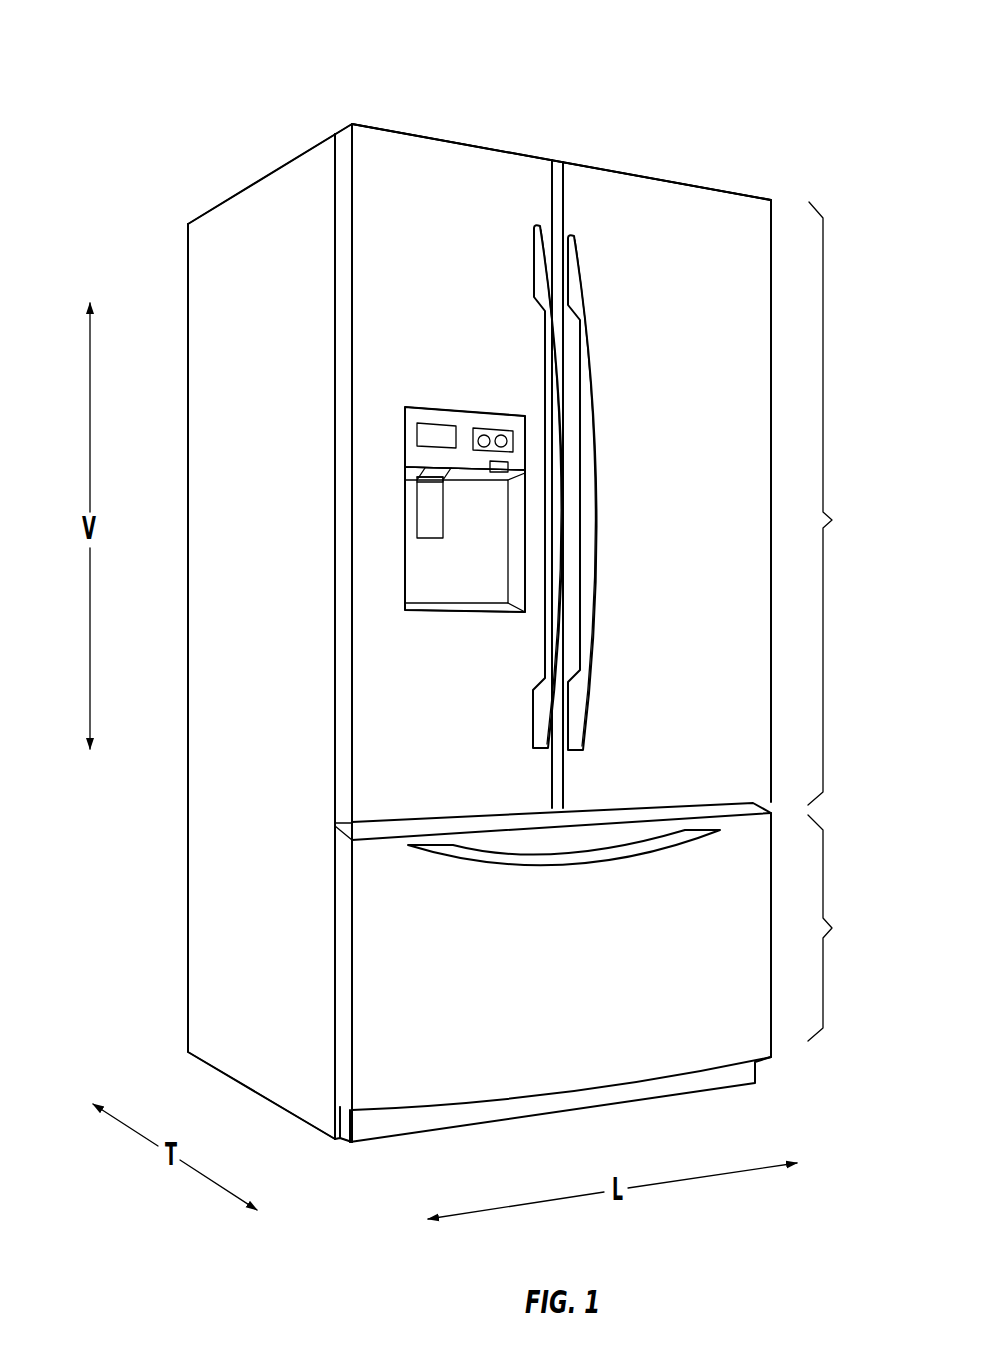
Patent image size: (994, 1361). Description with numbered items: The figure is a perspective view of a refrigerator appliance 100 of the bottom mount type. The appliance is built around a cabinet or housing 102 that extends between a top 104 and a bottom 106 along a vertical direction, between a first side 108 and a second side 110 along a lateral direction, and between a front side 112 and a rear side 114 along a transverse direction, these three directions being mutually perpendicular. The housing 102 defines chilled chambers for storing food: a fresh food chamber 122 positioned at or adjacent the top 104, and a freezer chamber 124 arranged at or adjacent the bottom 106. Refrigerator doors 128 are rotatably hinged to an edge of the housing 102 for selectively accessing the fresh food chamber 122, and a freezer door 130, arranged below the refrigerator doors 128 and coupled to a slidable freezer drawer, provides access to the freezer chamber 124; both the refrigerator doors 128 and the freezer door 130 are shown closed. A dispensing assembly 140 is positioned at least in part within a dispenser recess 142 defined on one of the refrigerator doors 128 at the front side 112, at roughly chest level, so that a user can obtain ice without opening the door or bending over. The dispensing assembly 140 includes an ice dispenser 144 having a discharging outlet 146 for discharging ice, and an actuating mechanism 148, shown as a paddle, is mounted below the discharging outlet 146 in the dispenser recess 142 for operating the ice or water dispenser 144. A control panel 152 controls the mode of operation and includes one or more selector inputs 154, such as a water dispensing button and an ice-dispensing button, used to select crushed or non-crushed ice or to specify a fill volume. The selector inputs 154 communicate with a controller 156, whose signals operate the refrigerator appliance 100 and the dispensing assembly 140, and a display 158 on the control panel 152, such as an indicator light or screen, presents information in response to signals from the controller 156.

The refrigerator appliance 100 is at (746, 74).
The housing 102 is at (262, 212).
The top 104 is at (185, 222).
The bottom 106 is at (176, 1049).
The first side 108 is at (349, 1152).
The second side 110 is at (762, 1087).
The front side 112 is at (331, 1146).
The rear side 114 is at (186, 1058).
The fresh food chamber 122 is at (841, 503).
The freezer chamber 124 is at (841, 928).
The refrigerator doors 128 is at (472, 271).
The freezer door 130 is at (612, 969).
The dispensing assembly 140 is at (414, 378).
The dispenser recess 142 is at (470, 603).
The ice dispenser 144 is at (408, 535).
The discharging outlet 146 is at (428, 478).
The actuating mechanism 148 is at (432, 524).
The control panel 152 is at (401, 428).
The selector inputs 154 is at (484, 436).
The controller 156 is at (513, 438).
The display 158 is at (436, 432).